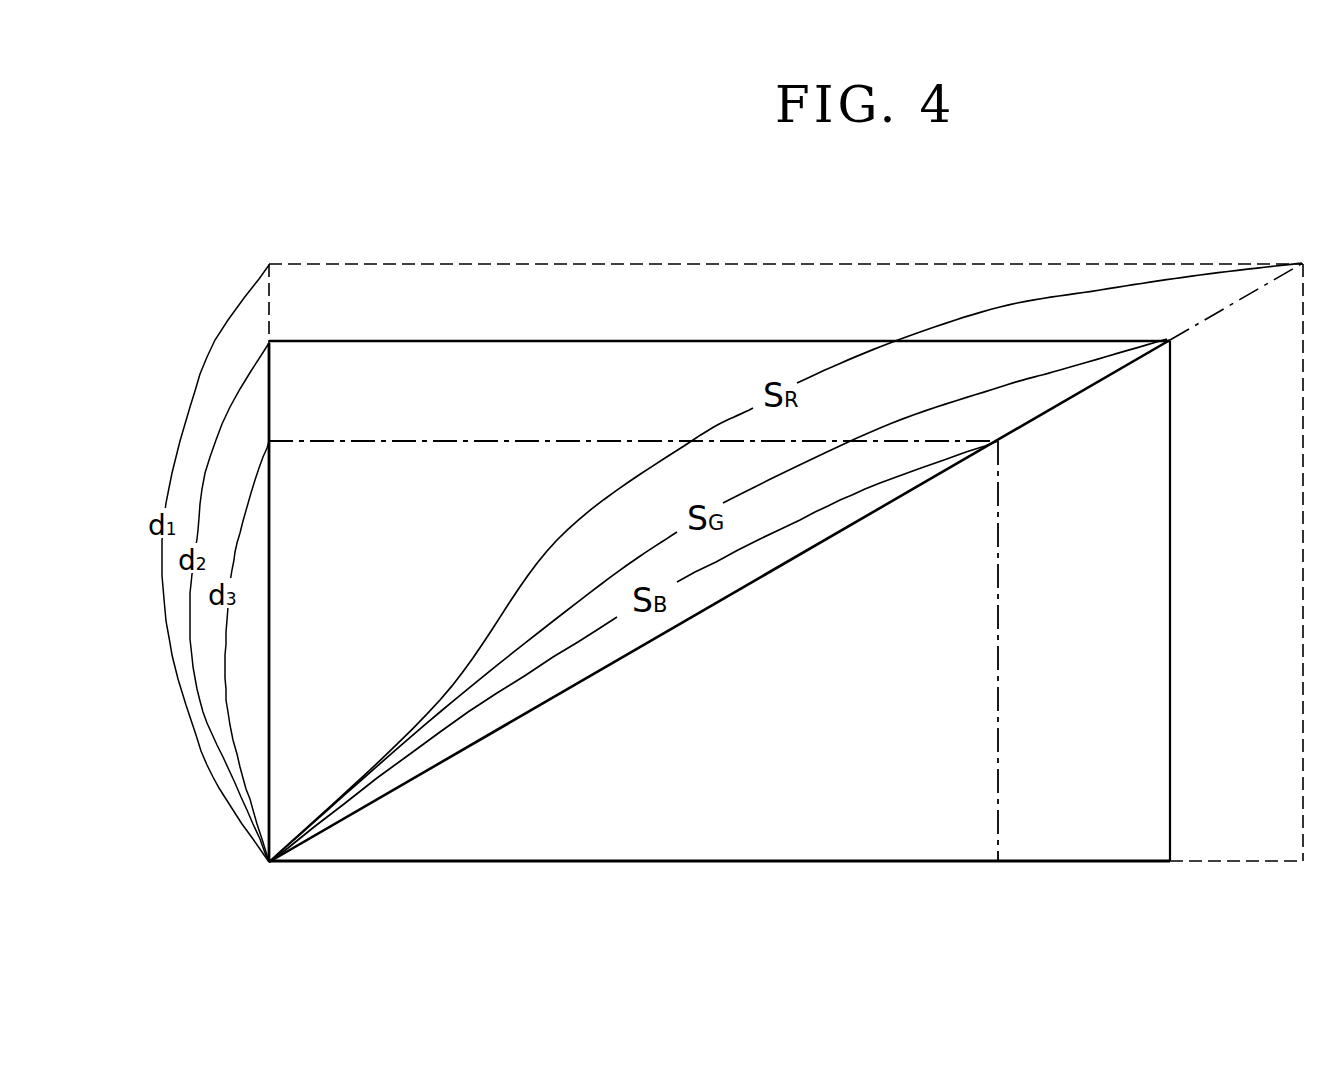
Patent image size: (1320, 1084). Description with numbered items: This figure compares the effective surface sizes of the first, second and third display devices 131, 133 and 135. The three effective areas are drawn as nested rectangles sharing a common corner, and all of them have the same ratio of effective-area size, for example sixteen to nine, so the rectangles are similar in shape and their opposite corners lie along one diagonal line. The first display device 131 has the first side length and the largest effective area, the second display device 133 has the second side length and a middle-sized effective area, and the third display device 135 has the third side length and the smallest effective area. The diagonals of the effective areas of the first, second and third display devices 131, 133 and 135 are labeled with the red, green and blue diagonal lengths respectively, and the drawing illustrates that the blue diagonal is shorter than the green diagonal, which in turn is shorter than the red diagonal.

The first display device 131 is at (1226, 831).
The second display device 133 is at (1094, 831).
The third display device 135 is at (892, 831).